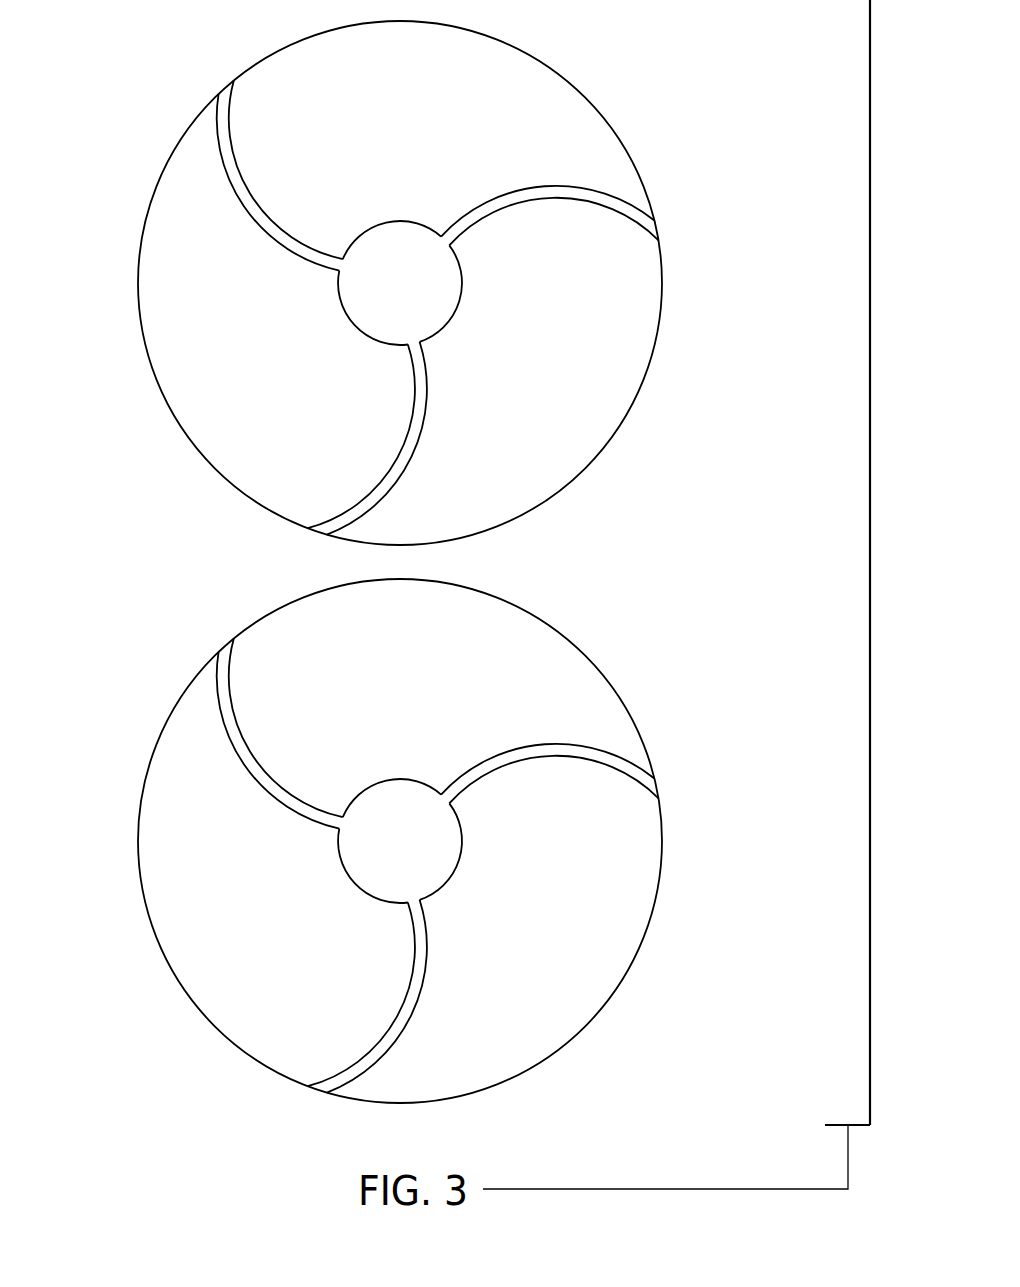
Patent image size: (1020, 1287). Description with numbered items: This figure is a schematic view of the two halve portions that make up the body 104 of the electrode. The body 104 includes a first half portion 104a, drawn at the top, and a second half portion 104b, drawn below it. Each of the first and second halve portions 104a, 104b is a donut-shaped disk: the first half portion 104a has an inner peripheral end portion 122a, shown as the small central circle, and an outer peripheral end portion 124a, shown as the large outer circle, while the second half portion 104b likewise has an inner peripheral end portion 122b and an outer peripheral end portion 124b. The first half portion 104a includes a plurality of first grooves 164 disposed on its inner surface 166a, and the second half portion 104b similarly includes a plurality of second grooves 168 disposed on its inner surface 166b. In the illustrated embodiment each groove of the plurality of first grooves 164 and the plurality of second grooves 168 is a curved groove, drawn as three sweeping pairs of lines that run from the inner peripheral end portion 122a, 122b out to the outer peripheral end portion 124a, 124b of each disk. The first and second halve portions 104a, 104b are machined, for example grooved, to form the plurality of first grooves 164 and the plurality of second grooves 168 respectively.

The body 104 is at (705, 67).
The first half portion 104a is at (193, 388).
The second half portion 104b is at (207, 947).
The inner peripheral end portion 122a is at (340, 297).
The inner peripheral end portion 122b is at (400, 841).
The outer peripheral end portion 124a is at (662, 297).
The outer peripheral end portion 124b is at (662, 855).
The plurality of first grooves 164 is at (457, 220).
The plurality of second grooves 168 is at (438, 866).
The inner surface 166a is at (583, 402).
The inner surface 166b is at (573, 972).